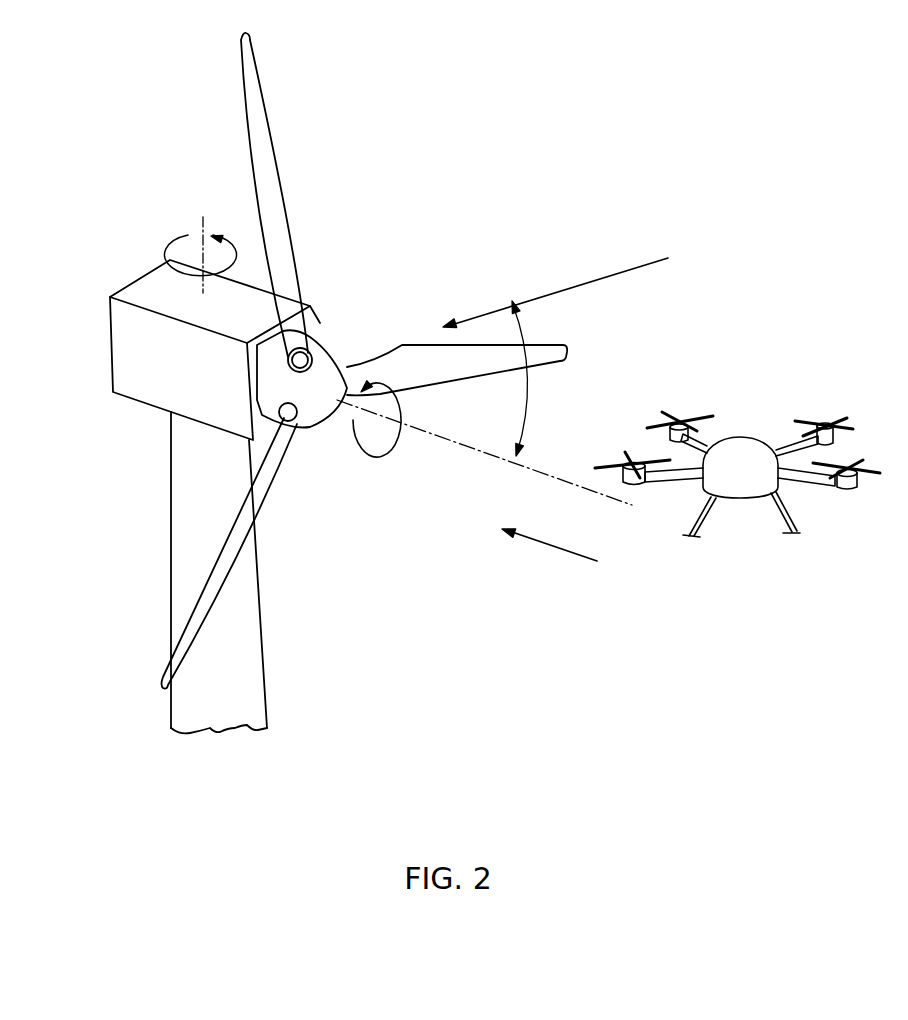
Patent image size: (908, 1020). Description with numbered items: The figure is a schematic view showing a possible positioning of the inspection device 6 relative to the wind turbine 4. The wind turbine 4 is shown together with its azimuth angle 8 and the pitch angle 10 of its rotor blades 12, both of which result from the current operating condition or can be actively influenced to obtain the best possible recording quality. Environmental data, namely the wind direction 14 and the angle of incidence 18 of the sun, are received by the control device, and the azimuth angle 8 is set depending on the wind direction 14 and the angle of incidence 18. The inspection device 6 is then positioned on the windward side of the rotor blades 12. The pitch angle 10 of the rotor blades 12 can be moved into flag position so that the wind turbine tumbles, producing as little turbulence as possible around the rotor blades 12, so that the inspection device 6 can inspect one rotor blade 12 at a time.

The wind turbine 4 is at (185, 513).
The inspection device 6 is at (742, 442).
The azimuth angle 8 is at (168, 243).
The pitch angle 10 is at (370, 450).
The rotor blades 12 is at (277, 217).
The wind direction 14 is at (557, 550).
The angle of incidence 18 is at (600, 278).